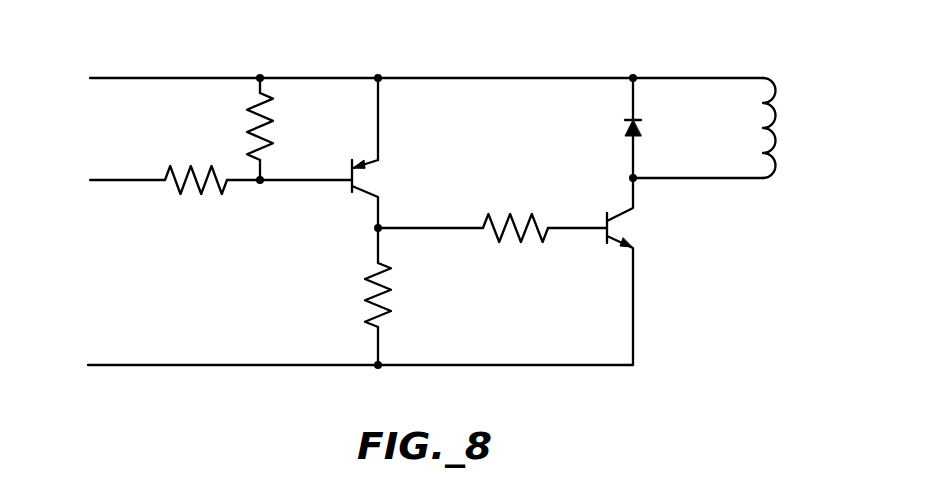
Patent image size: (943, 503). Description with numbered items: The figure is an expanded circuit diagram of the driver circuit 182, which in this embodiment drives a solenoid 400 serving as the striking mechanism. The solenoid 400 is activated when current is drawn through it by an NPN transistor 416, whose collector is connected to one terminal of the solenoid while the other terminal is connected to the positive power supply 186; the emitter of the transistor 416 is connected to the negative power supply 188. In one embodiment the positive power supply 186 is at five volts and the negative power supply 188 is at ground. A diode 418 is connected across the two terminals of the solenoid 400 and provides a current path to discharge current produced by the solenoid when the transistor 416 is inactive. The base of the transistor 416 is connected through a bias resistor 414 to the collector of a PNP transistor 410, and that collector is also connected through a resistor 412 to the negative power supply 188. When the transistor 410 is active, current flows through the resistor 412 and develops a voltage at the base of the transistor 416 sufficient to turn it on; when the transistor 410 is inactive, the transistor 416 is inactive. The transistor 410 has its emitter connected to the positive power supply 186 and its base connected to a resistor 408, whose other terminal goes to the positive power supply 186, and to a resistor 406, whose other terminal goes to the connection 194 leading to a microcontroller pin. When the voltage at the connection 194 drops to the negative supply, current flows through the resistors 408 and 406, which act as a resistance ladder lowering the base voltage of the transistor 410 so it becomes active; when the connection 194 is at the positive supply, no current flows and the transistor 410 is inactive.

The driver circuit 182 is at (316, 54).
The positive power supply 186 is at (139, 77).
The negative power supply 188 is at (143, 367).
The connection 194 is at (110, 182).
The solenoid 400 is at (777, 112).
The resistor 406 is at (172, 192).
The resistor 408 is at (247, 105).
The PNP transistor 410 is at (371, 163).
The resistor 412 is at (365, 290).
The bias resistor 414 is at (512, 247).
The NPN transistor 416 is at (621, 219).
The diode 418 is at (633, 110).